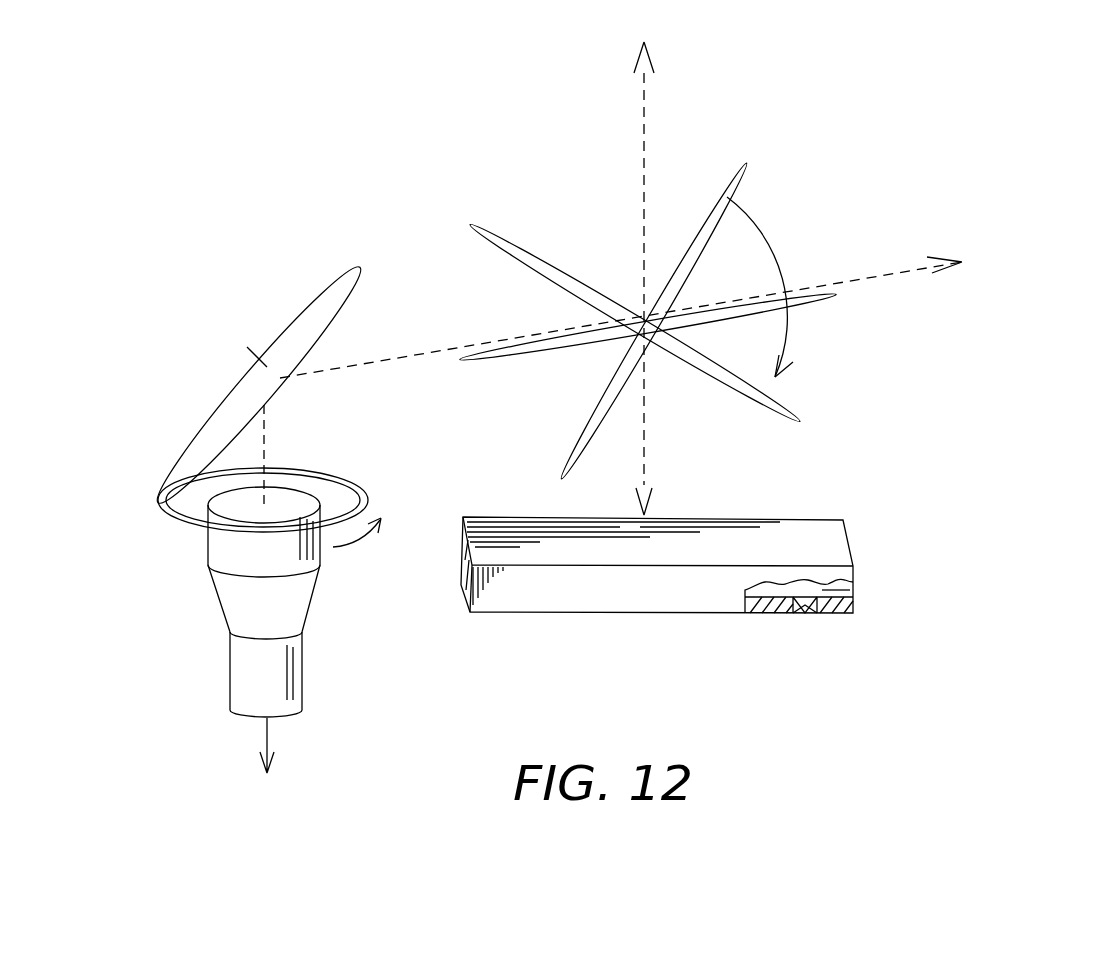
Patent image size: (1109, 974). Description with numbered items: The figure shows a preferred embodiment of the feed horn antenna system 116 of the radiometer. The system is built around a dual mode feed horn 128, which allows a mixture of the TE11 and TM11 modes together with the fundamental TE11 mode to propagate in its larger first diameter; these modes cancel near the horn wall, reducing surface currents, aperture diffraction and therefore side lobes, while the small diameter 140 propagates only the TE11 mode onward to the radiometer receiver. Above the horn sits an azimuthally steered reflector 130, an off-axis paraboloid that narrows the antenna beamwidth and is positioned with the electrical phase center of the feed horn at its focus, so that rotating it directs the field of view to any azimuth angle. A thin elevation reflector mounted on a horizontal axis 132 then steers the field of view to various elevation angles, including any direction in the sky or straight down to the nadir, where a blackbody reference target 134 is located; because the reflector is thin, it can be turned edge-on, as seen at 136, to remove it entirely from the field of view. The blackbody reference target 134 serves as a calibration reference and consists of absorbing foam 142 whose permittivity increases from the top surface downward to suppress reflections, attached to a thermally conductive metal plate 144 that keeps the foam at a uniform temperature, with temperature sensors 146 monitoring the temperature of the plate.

The feed horn antenna system 116 is at (565, 168).
The dual mode feed horn 128 is at (220, 597).
The azimuthally steered reflector 130 is at (155, 500).
The horizontal axis 132 is at (750, 165).
The blackbody reference target 134 is at (583, 615).
The edge-on position of elevation reflector 136 is at (557, 348).
The small diameter 140 is at (292, 717).
The absorbing foam 142 is at (855, 592).
The thermally conductive metal plate 144 is at (768, 615).
The temperature sensors 146 is at (807, 615).